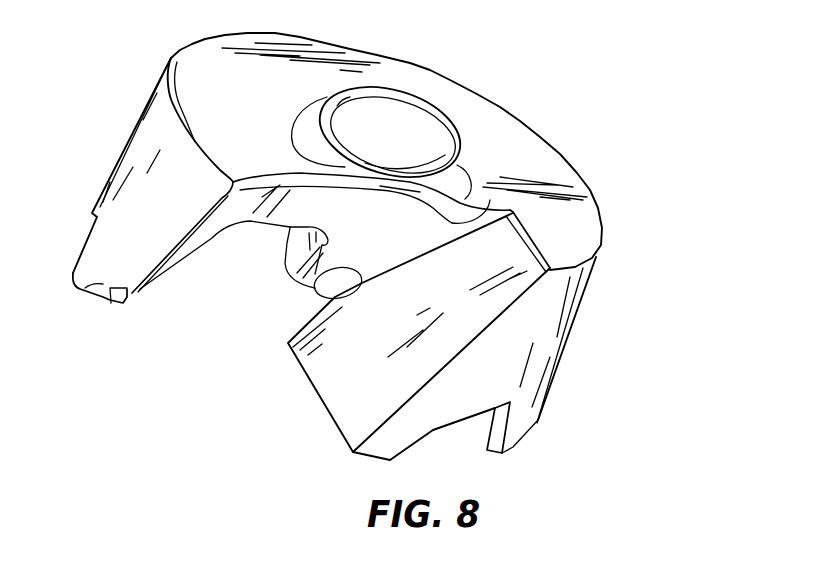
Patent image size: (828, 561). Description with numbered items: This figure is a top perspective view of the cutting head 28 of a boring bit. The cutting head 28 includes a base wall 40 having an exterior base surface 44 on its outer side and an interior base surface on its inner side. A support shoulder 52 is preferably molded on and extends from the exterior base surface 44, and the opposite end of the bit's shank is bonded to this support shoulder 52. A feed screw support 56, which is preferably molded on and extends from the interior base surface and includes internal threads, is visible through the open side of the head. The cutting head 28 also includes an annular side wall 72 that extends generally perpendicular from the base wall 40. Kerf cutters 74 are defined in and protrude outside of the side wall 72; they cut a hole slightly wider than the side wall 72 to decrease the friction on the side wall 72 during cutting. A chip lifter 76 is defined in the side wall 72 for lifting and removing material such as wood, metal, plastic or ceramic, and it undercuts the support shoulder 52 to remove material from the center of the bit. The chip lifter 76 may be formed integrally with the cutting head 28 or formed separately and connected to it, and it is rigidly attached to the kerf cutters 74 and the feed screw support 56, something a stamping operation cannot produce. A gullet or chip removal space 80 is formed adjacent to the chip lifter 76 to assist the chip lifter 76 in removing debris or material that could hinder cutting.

The cutting head 28 is at (640, 208).
The base wall 40 is at (478, 208).
The exterior base surface 44 is at (258, 128).
The support shoulder 52 is at (397, 117).
The feed screw support 56 is at (273, 266).
The annular side wall 72 is at (563, 350).
The kerf cutters 74 is at (80, 291).
The chip lifter 76 is at (377, 398).
The chip removal space 80 is at (234, 392).